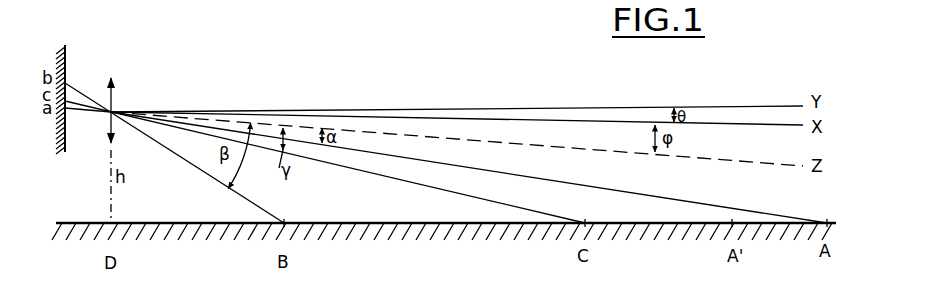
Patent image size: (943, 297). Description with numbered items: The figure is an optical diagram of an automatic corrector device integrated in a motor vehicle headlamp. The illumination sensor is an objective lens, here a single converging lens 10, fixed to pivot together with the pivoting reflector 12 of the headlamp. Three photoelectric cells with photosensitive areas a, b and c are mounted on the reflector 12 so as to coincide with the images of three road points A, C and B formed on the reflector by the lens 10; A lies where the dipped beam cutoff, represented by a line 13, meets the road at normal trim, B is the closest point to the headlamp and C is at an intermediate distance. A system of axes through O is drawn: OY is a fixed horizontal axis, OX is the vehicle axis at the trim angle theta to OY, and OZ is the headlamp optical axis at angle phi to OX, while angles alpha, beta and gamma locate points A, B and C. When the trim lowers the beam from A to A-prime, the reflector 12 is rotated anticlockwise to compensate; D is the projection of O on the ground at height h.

The converging lens 10 is at (117, 106).
The pivoting reflector 12 is at (65, 148).
The dipped beam cutoff line 13 is at (458, 163).